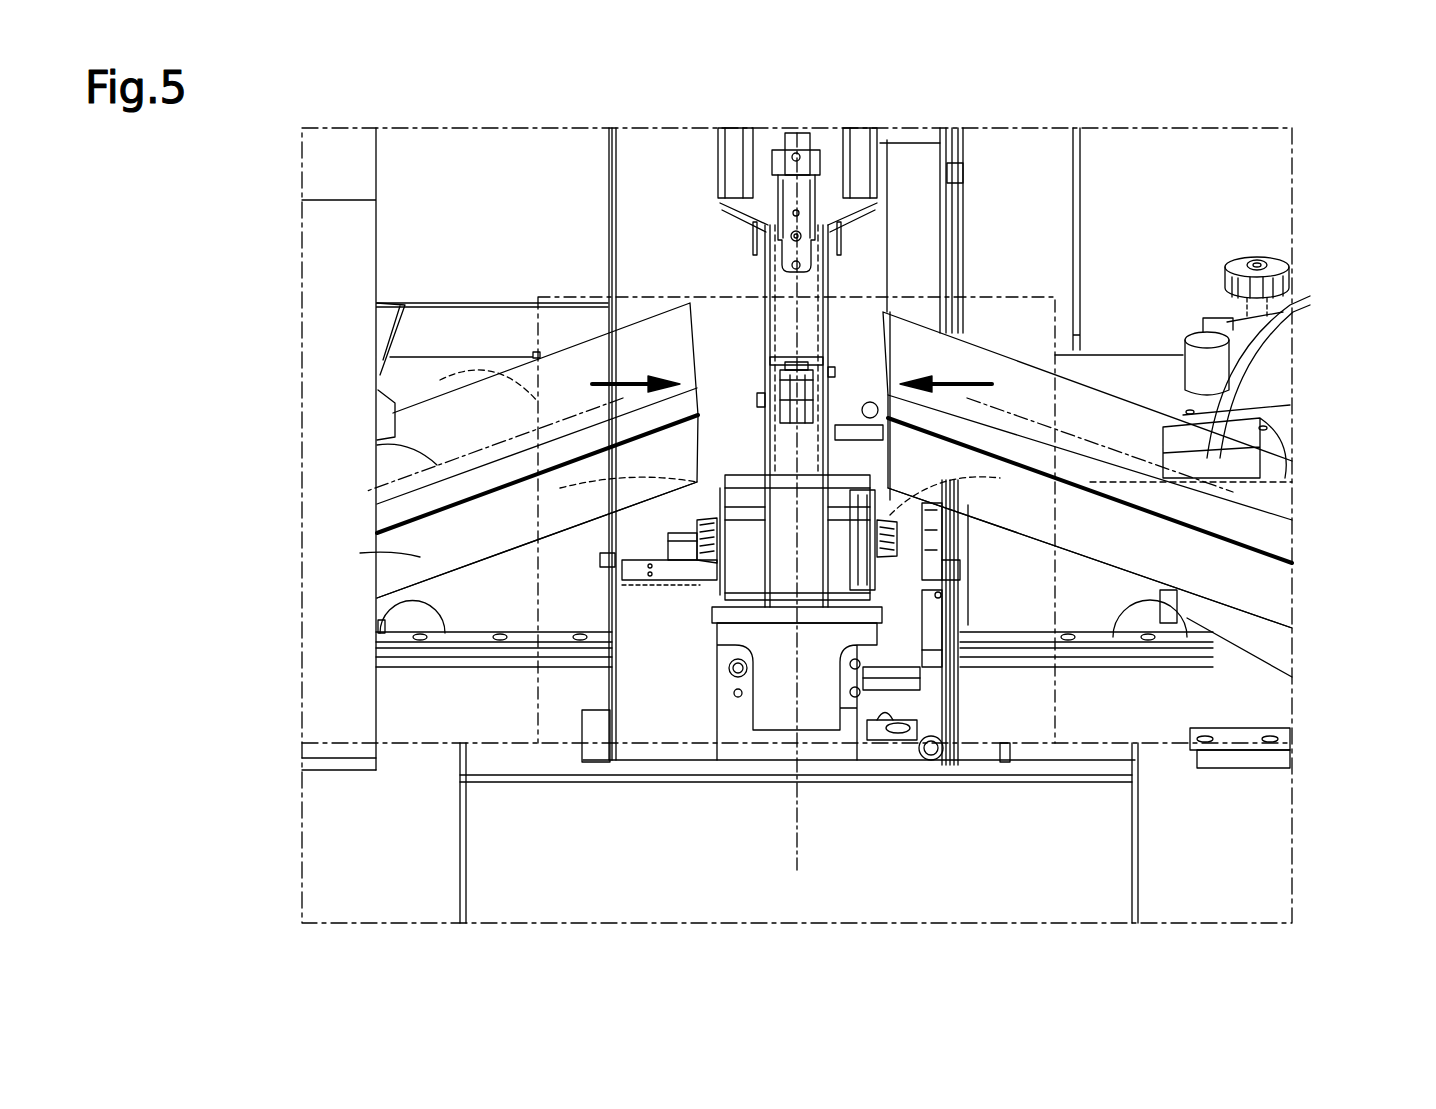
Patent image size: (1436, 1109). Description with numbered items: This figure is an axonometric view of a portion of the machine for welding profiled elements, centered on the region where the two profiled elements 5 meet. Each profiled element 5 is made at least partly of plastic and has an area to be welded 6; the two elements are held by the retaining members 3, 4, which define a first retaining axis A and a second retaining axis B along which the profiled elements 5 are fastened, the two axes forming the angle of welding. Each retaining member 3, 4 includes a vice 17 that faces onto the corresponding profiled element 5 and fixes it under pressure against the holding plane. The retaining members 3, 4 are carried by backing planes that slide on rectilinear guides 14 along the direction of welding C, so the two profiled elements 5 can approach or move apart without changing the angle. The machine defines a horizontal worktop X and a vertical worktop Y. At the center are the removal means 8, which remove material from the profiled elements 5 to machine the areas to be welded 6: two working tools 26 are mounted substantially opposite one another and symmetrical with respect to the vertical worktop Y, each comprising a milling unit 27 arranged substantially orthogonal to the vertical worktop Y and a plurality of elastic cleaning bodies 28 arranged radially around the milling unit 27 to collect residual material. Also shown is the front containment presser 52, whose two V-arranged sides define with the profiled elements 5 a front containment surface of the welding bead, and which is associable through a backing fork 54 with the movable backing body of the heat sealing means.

The retaining member 3 is at (1282, 300).
The retaining member 4 is at (1226, 395).
The profiled element 5 is at (415, 558).
The area to be welded 6 is at (693, 347).
The removal means 8 is at (727, 740).
The rectilinear guide 14 is at (480, 598).
The vice 17 is at (1267, 368).
The working tool 26 is at (713, 563).
The milling unit 27 is at (897, 538).
The cleaning body 28 is at (698, 522).
The front containment presser 52 is at (825, 360).
The backing fork 54 is at (770, 360).
The first retaining axis A is at (1150, 418).
The second retaining axis B is at (425, 462).
The direction of welding C is at (792, 371).
The horizontal worktop X is at (410, 383).
The vertical worktop Y is at (797, 845).